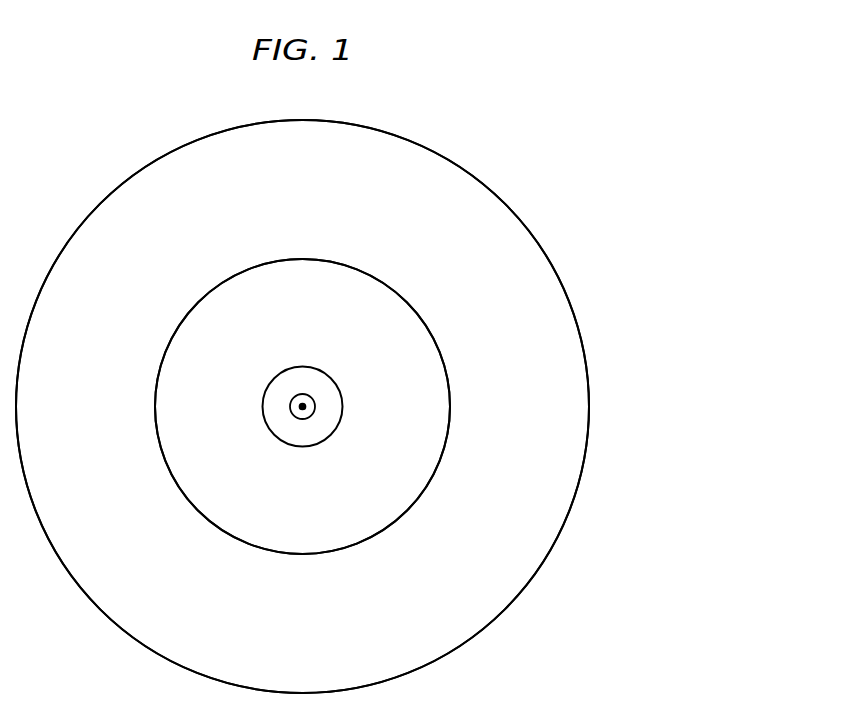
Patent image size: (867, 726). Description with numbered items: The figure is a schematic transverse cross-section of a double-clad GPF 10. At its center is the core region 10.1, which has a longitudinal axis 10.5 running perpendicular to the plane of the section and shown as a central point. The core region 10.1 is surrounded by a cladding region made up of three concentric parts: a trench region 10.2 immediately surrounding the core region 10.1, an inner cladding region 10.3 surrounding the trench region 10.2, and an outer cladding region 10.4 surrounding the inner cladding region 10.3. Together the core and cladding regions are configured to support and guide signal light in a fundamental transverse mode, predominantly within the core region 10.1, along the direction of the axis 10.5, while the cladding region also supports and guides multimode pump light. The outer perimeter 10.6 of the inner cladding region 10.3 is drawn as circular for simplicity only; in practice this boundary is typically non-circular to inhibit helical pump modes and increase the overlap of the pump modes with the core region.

The double-clad GPF 10 is at (462, 123).
The core region 10.1 is at (308, 403).
The trench region 10.2 is at (273, 394).
The inner cladding region 10.3 is at (411, 316).
The outer cladding region 10.4 is at (500, 211).
The longitudinal axis 10.5 is at (300, 410).
The outer perimeter 10.6 is at (206, 293).